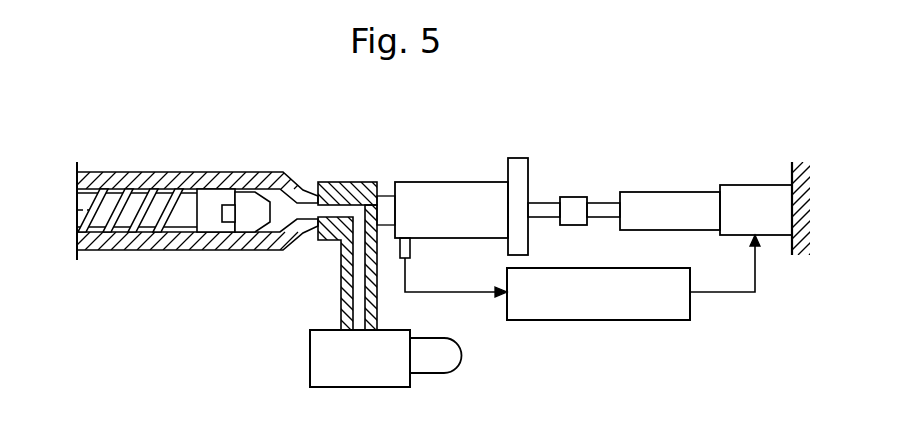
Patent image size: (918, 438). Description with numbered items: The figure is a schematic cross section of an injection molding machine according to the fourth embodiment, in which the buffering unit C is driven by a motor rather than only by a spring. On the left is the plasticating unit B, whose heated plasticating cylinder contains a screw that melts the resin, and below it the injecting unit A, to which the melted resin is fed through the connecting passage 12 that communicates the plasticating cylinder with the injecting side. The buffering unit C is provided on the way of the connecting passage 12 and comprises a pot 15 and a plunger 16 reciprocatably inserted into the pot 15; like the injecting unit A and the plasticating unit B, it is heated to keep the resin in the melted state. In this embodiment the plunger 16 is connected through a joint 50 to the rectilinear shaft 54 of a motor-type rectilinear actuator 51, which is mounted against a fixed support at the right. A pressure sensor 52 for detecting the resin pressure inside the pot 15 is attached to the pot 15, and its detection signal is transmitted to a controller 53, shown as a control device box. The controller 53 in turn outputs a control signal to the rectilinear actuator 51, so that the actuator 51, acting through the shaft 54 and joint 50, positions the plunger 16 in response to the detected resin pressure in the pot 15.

The injecting unit A is at (292, 362).
The plasticating unit B is at (217, 162).
The buffering unit C is at (593, 168).
The connecting passage 12 is at (352, 181).
The pot 15 is at (444, 182).
The plunger 16 is at (550, 202).
The joint 50 is at (574, 197).
The motor-type rectilinear actuator 51 is at (686, 200).
The pressure sensor 52 is at (410, 245).
The controller 53 is at (582, 321).
The rectilinear shaft 54 is at (602, 203).